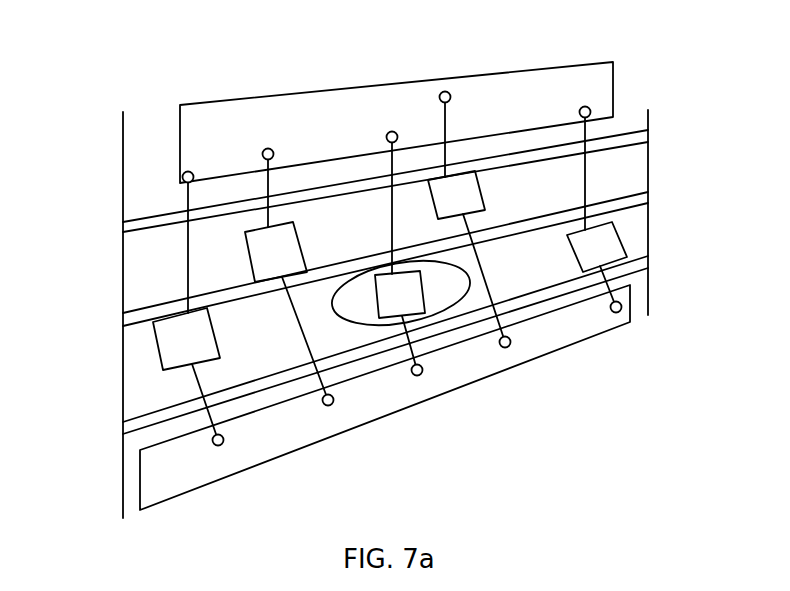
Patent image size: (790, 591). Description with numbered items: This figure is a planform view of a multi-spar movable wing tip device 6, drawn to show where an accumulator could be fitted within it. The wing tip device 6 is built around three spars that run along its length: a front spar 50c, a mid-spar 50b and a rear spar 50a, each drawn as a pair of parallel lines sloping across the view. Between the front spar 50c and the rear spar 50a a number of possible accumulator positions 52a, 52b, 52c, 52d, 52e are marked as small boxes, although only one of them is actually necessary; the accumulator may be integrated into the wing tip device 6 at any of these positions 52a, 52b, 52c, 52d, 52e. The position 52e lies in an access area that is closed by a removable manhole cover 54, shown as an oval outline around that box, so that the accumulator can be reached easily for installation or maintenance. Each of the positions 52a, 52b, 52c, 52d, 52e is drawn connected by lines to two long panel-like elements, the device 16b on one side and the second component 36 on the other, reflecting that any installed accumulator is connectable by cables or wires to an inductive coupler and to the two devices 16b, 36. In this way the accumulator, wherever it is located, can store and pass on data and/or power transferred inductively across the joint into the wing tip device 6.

The movable wing tip device 6 is at (616, 375).
The device 16b is at (342, 90).
The second component 36 is at (400, 411).
The rear spar 50a is at (643, 133).
The mid-spar 50b is at (645, 197).
The front spar 50c is at (650, 254).
The accumulator position 52a is at (160, 360).
The accumulator position 52b is at (250, 268).
The accumulator position 52c is at (460, 173).
The accumulator position 52d is at (628, 282).
The accumulator position 52e is at (398, 318).
The removable manhole cover 54 is at (437, 318).